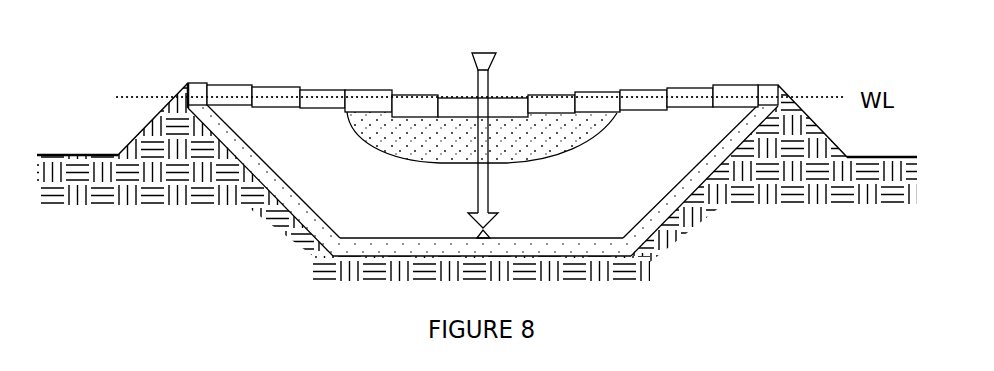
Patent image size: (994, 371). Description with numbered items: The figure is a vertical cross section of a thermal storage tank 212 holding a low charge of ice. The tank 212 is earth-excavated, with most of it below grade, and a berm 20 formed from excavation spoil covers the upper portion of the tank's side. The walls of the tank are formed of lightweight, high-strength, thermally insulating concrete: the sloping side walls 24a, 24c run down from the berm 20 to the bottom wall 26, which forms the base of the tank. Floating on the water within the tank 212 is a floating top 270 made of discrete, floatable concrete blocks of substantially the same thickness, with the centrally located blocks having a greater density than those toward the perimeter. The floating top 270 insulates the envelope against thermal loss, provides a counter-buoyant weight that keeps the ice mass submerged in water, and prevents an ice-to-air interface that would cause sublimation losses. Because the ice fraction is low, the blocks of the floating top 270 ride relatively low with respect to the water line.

The berm 20 is at (140, 132).
The side wall 24a is at (290, 219).
The side wall 24c is at (668, 219).
The bottom wall 26 is at (360, 246).
The tank 212 is at (482, 73).
The floating top 270 is at (322, 82).